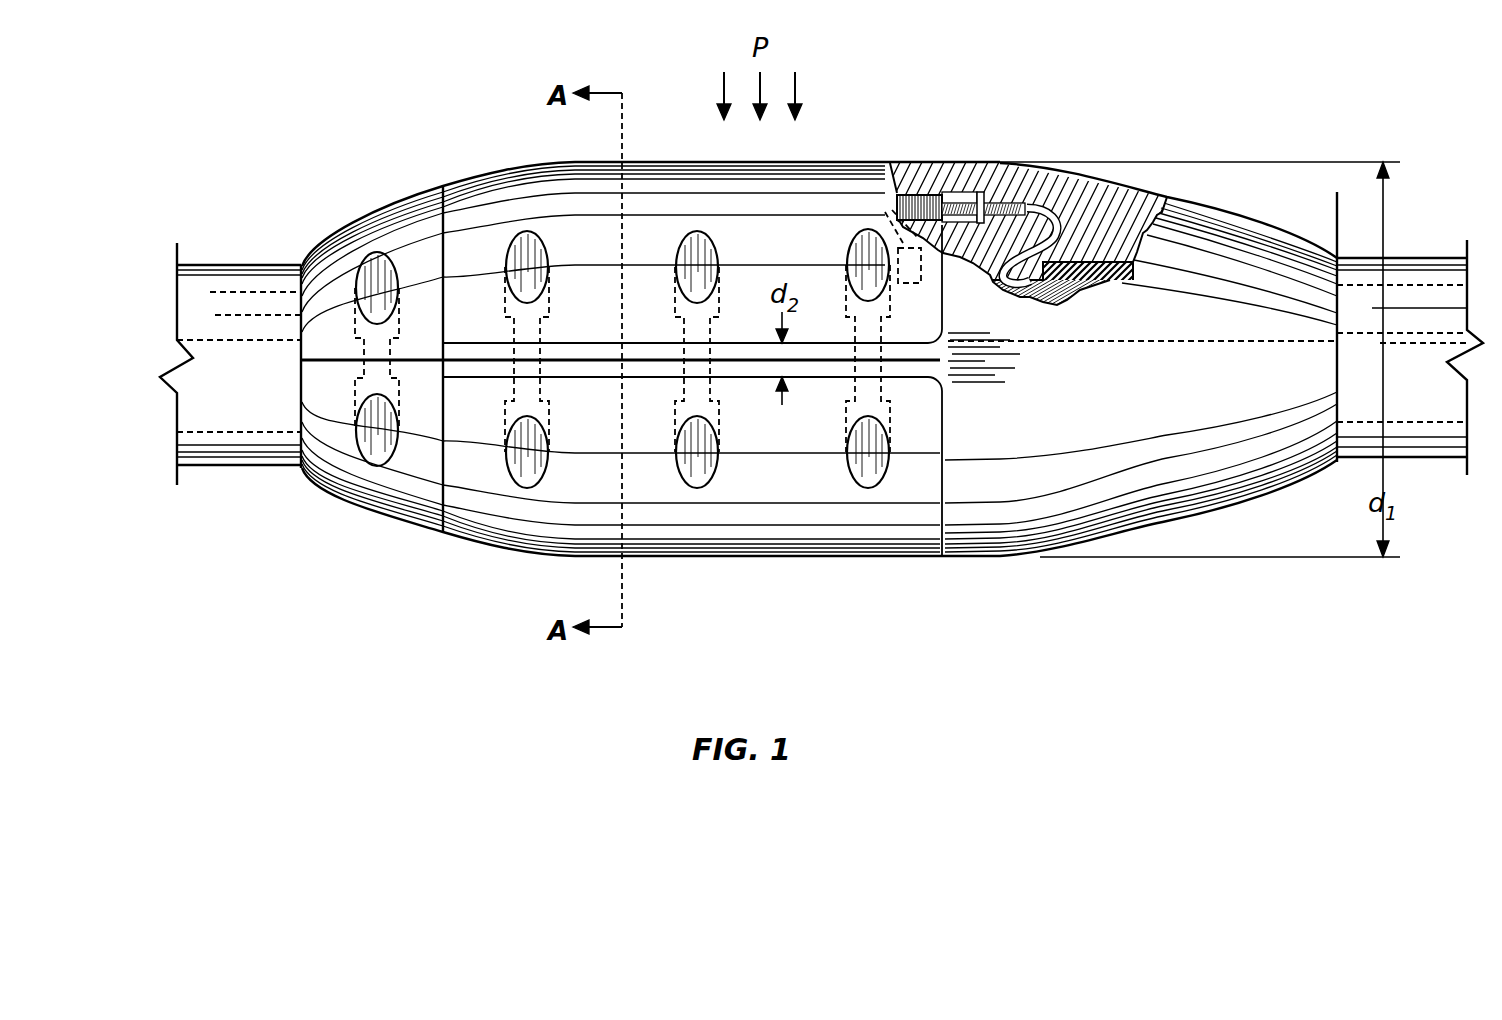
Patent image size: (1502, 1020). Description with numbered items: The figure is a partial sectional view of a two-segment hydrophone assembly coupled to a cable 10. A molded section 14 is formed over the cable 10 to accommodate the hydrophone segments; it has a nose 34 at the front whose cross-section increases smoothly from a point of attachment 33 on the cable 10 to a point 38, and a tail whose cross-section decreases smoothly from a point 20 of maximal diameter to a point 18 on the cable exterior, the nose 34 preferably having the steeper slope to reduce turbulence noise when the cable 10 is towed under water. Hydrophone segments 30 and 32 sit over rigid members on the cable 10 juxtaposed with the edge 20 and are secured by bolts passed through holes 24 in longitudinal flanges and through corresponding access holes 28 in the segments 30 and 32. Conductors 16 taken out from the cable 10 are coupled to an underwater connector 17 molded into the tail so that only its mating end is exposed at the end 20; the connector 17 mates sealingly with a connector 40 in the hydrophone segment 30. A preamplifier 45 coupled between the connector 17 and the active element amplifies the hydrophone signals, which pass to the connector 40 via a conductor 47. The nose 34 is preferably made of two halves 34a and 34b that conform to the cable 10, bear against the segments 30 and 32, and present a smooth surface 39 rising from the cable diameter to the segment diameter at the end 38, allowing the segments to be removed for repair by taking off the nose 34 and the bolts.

The cable 10 is at (1400, 258).
The molded section 14 is at (1213, 225).
The conductors 16 is at (1060, 215).
The underwater connector 17 is at (1015, 198).
The point on the cable exterior 18 is at (1337, 192).
The point of maximal diameter 20 is at (942, 162).
The holes 24 is at (710, 365).
The access holes 28 is at (873, 462).
The hydrophone segment 30 is at (703, 160).
The hydrophone segment 32 is at (676, 560).
The point of attachment 33 is at (302, 265).
The nose 34 is at (407, 198).
The nose half 34a is at (370, 233).
The nose half 34b is at (372, 500).
The point 38 is at (443, 185).
The smooth surface 39 is at (333, 435).
The connector 40 is at (982, 192).
The preamplifier 45 is at (897, 290).
The conductor 47 is at (885, 210).